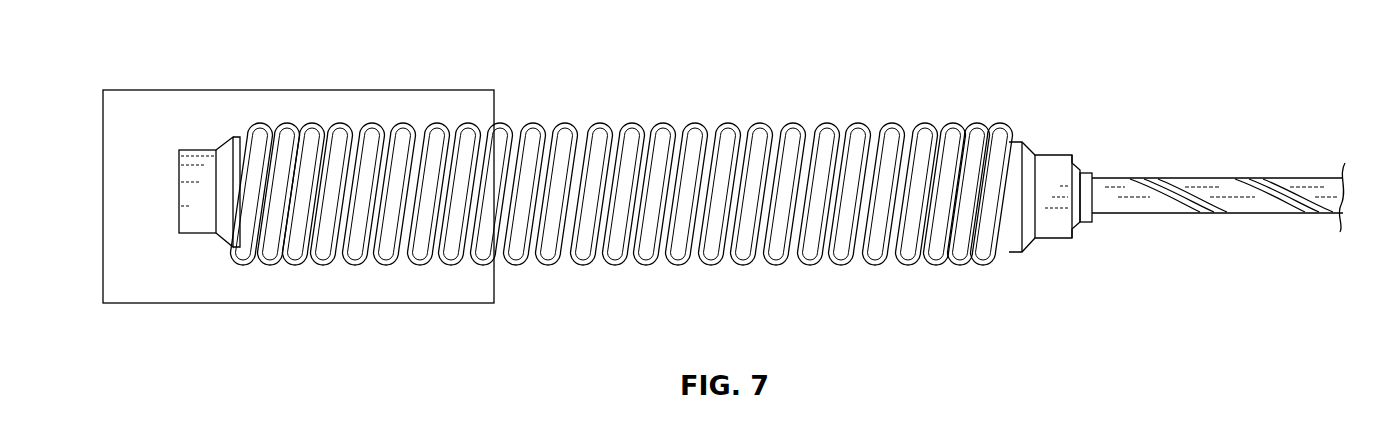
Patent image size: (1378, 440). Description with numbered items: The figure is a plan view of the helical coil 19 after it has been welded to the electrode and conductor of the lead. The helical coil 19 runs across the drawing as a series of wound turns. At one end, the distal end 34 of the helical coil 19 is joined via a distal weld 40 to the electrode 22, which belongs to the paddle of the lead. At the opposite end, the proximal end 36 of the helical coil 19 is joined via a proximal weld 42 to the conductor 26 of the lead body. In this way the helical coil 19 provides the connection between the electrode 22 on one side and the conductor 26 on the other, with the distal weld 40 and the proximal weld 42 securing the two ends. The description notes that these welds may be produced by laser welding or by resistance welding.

The helical coil 19 is at (622, 150).
The electrode 22 is at (402, 90).
The conductor 26 is at (1202, 177).
The distal end 34 is at (291, 108).
The proximal end 36 is at (1008, 108).
The distal weld 40 is at (207, 150).
The proximal weld 42 is at (1057, 155).